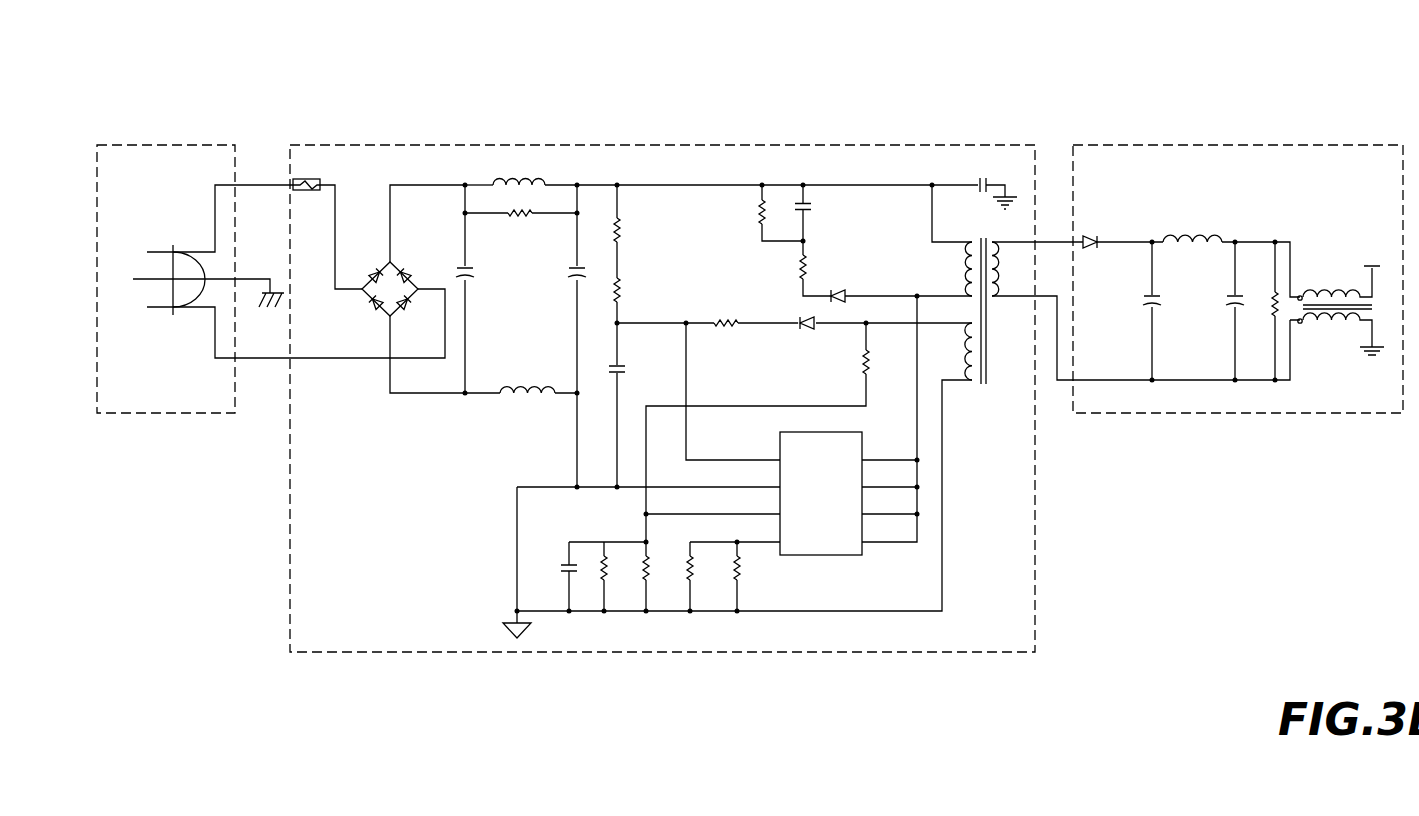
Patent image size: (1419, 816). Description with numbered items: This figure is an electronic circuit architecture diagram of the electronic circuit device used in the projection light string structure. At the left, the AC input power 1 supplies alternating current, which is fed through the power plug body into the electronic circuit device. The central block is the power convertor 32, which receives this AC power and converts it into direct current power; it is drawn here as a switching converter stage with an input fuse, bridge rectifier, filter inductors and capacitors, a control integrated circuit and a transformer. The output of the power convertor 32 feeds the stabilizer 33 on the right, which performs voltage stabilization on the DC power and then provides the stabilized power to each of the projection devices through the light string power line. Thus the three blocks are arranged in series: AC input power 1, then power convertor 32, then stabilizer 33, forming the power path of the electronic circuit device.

The AC input power 1 is at (172, 140).
The power convertor 32 is at (612, 145).
The stabilizer 33 is at (1194, 145).